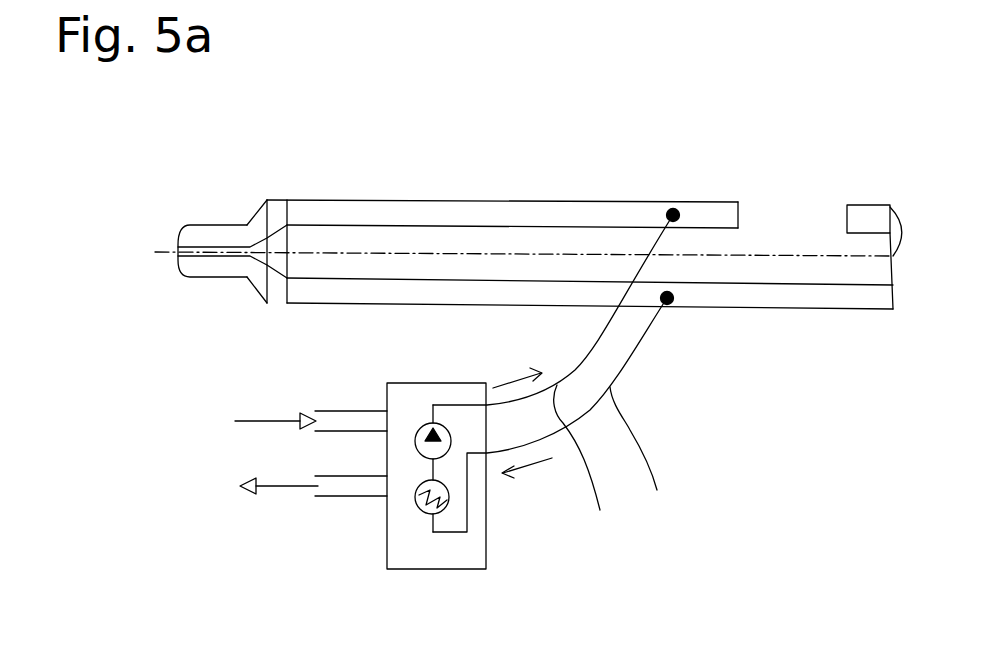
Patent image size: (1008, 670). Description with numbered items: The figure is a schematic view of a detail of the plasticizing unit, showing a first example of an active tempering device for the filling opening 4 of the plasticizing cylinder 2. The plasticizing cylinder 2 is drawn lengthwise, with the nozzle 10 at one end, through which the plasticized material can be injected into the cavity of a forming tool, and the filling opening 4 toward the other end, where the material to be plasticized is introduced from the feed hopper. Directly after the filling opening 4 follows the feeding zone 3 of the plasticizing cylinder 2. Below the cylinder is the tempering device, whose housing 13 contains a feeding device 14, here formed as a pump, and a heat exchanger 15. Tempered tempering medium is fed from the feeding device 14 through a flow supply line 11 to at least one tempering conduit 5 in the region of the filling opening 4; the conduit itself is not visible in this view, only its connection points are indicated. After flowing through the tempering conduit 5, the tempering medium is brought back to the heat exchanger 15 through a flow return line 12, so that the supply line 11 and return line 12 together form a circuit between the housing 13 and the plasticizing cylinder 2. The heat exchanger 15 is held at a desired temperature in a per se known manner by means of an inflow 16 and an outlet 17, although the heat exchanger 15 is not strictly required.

The plasticizing cylinder 2 is at (478, 213).
The feeding zone 3 is at (593, 194).
The filling opening 4 is at (793, 219).
The tempering conduit 5 is at (675, 213).
The nozzle 10 is at (207, 238).
The flow supply line 11 is at (553, 390).
The flow return line 12 is at (565, 421).
The housing 13 is at (385, 557).
The feeding device 14 is at (415, 438).
The heat exchanger 15 is at (423, 513).
The inflow 16 is at (343, 418).
The outlet 17 is at (338, 484).